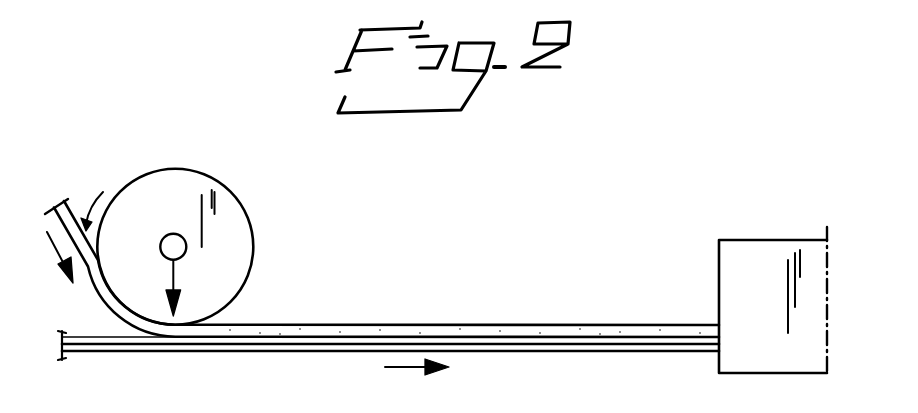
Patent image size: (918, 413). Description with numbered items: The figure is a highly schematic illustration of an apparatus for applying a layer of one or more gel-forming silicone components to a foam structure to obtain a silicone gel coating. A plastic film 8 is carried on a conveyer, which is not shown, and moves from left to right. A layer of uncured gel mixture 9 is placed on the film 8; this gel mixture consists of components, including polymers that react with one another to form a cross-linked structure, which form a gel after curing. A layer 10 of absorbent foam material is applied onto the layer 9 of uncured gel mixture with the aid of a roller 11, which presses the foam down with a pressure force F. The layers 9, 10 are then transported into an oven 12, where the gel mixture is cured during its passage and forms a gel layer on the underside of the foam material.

The plastic film 8 is at (540, 353).
The layer of uncured gel mixture 9 is at (608, 348).
The layer of absorbent foam material 10 is at (387, 332).
The roller 11 is at (142, 188).
The oven 12 is at (725, 262).